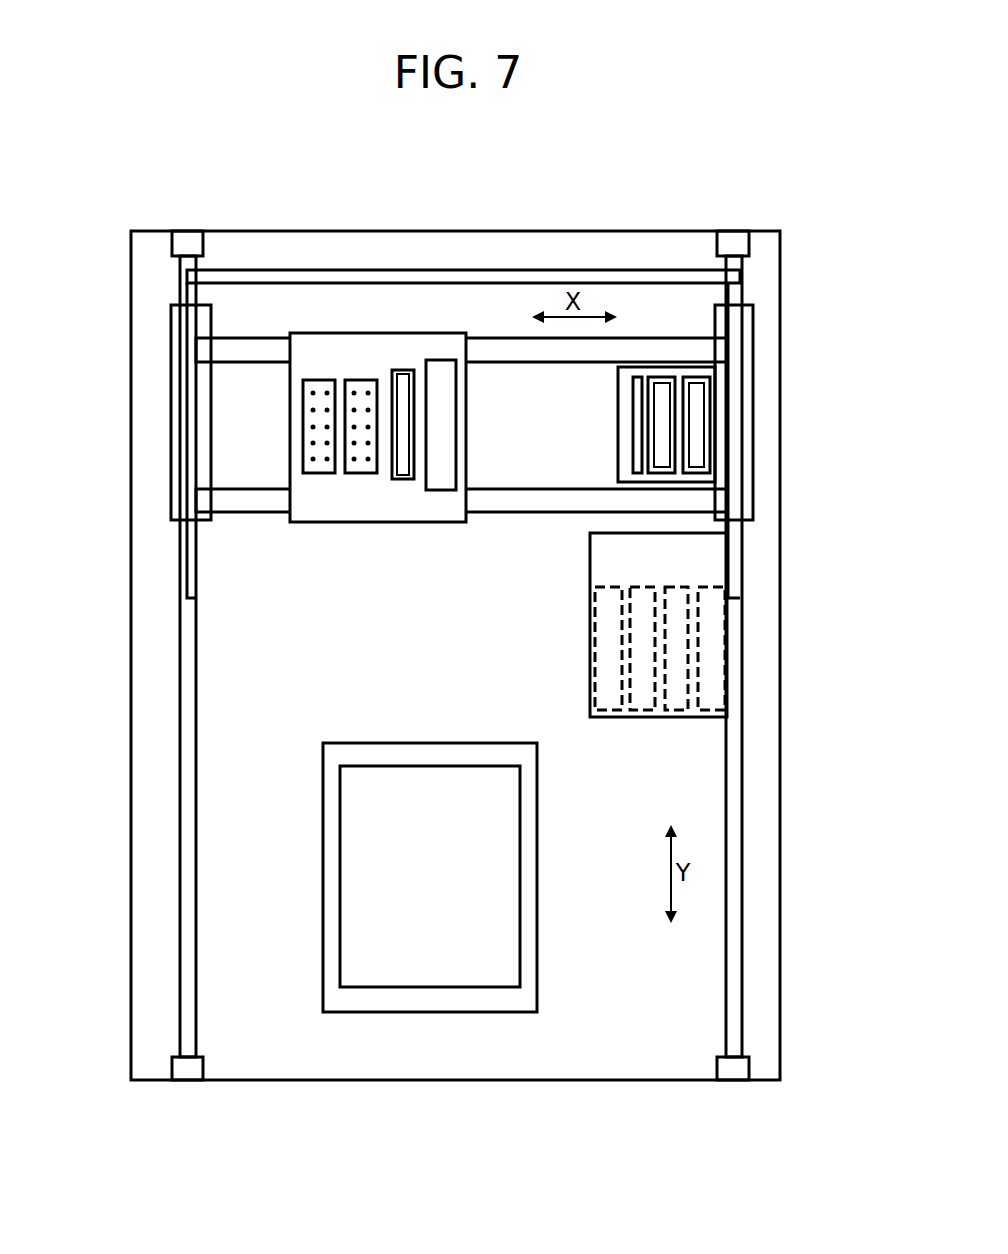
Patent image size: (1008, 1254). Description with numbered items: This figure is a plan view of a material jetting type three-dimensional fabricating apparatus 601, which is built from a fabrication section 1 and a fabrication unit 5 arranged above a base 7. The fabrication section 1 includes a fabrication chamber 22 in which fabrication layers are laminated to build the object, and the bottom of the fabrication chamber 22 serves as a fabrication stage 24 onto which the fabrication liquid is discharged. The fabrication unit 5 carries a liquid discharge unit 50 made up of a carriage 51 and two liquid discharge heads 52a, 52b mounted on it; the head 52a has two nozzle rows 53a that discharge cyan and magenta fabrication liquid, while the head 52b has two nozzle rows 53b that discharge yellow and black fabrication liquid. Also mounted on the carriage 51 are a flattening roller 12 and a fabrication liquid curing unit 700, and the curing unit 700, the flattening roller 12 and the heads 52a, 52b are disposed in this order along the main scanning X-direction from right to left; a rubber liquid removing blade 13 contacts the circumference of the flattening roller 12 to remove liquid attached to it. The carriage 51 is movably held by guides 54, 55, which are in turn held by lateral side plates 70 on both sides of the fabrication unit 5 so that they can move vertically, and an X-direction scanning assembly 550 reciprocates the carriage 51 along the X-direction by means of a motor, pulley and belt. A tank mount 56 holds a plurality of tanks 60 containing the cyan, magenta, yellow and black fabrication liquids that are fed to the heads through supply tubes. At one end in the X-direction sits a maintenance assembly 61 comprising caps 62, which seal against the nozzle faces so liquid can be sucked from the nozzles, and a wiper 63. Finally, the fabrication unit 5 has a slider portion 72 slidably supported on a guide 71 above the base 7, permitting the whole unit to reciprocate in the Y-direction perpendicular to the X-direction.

The fabrication section 1 is at (435, 1020).
The fabrication unit 5 is at (158, 284).
The base 7 is at (762, 895).
The flattening roller 12 is at (403, 479).
The liquid removing blade 13 is at (403, 369).
The fabrication chamber 22 is at (355, 890).
The fabrication stage 24 is at (505, 862).
The liquid discharge unit 50 is at (359, 313).
The carriage 51 is at (340, 333).
The liquid discharge head 52a is at (360, 475).
The liquid discharge head 52b is at (323, 475).
The nozzle row 53a is at (354, 391).
The nozzle row 53b is at (313, 391).
The guide 54 is at (485, 340).
The guide 55 is at (495, 512).
The tank mount 56 is at (712, 567).
The tanks 60 is at (712, 648).
The maintenance assembly 61 is at (720, 445).
The caps 62 is at (660, 415).
The wiper 63 is at (632, 420).
The lateral side plates 70 is at (190, 452).
The guide 71 is at (186, 648).
The slider portion 72 is at (181, 388).
The X-direction scanning assembly 550 is at (766, 292).
The three-dimensional fabricating apparatus 601 is at (731, 203).
The fabrication liquid curing unit 700 is at (441, 490).